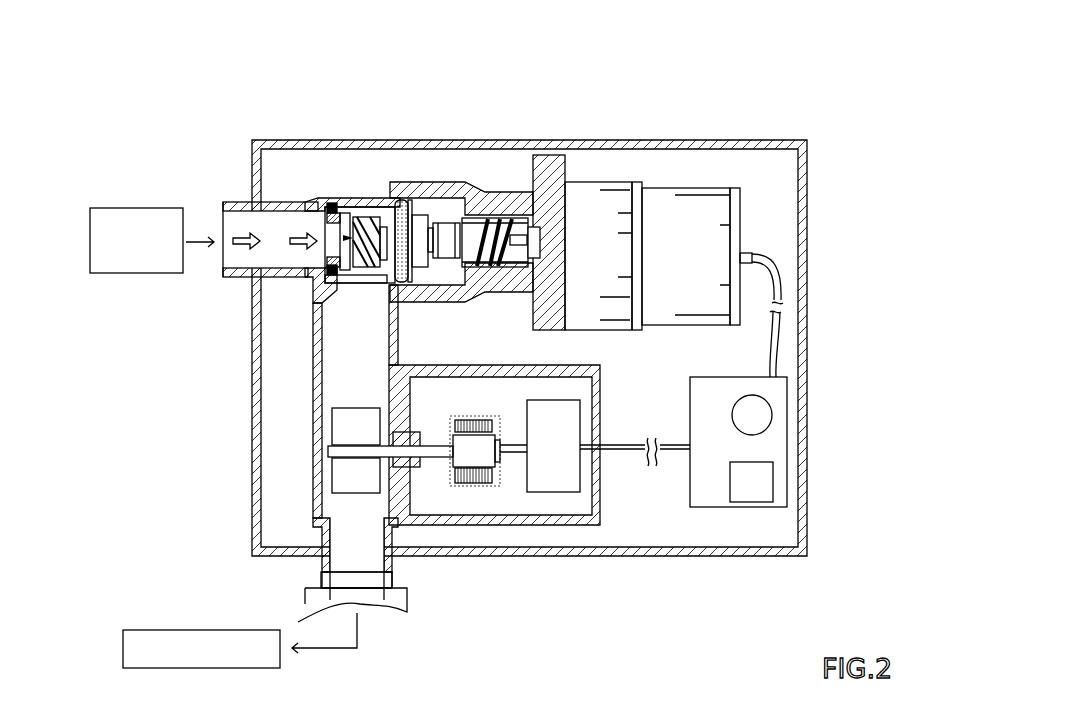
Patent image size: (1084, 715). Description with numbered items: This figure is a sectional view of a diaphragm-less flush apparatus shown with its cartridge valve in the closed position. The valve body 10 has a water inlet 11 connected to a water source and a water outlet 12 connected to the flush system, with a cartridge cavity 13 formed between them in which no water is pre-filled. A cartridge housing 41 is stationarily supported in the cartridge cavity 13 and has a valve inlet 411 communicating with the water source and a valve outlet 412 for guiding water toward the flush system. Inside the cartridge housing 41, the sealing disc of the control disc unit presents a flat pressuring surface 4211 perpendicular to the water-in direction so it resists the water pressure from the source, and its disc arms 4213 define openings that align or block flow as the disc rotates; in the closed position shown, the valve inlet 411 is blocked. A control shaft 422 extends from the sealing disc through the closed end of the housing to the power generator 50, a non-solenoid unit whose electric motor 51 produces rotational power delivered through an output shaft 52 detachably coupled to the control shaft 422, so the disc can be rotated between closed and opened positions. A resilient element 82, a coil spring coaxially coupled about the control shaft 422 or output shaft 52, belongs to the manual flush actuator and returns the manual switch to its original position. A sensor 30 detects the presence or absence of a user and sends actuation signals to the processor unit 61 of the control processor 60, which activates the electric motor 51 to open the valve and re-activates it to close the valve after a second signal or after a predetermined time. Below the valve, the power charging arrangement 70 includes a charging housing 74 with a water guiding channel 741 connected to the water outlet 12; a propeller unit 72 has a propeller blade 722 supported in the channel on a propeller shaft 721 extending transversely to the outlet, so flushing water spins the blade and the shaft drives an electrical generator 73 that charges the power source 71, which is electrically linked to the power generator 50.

The valve body 10 is at (165, 145).
The water inlet 11 is at (243, 202).
The water outlet 12 is at (320, 325).
The cartridge cavity 13 is at (337, 288).
The sensor 30 is at (760, 414).
The cartridge housing 41 is at (346, 197).
The power generator 50 is at (703, 84).
The electric motor 51 is at (640, 233).
The output shaft 52 is at (617, 252).
The control processor 60 is at (879, 492).
The processor unit 61 is at (762, 481).
The power charging arrangement 70 is at (645, 615).
The power source 71 is at (553, 446).
The propeller unit 72 is at (532, 613).
The electrical generator 73 is at (492, 482).
The charging housing 74 is at (356, 478).
The resilient element 82 is at (488, 235).
The valve inlet 411 is at (322, 217).
The valve outlet 412 is at (366, 302).
The control shaft 422 is at (447, 222).
The flat pressuring surface 4211 is at (335, 253).
The disc arms 4213 is at (368, 232).
The propeller shaft 721 is at (468, 470).
The propeller blade 722 is at (405, 545).
The water guiding channel 741 is at (317, 508).